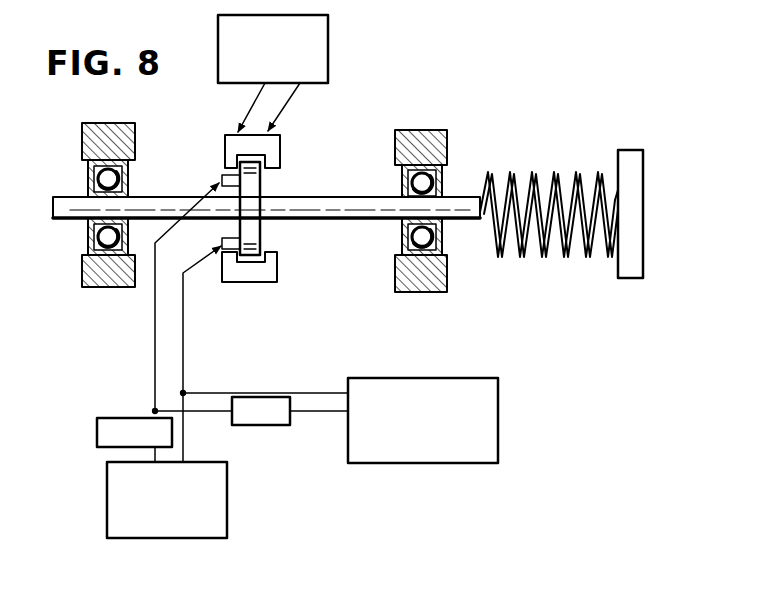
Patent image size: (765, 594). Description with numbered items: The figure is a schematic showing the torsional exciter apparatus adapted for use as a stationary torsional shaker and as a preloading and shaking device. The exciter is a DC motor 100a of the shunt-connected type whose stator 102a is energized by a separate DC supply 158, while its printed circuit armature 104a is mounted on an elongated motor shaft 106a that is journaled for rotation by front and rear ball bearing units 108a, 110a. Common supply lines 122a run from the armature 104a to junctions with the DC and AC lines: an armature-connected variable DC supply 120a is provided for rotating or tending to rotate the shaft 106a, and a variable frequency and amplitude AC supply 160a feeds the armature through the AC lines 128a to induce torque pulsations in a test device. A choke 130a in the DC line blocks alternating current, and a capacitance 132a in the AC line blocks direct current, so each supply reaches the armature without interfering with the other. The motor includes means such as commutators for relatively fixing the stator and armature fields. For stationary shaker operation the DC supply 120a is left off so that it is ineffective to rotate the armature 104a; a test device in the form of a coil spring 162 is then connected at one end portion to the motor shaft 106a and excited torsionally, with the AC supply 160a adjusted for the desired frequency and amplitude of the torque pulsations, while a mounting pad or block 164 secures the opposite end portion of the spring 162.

The DC motor 100a is at (292, 182).
The stator 102a is at (288, 125).
The armature 104a is at (262, 192).
The motor shaft 106a is at (331, 221).
The front bearing unit 108a is at (447, 170).
The rear bearing unit 110a is at (137, 163).
The variable DC supply 120a is at (152, 540).
The common supply lines 122a is at (155, 317).
The AC lines 128a is at (316, 412).
The choke 130a is at (120, 418).
The capacitance 132a is at (272, 425).
The DC supply 158 is at (328, 15).
The variable frequency and amplitude AC supply 160a is at (460, 463).
The coil spring 162 is at (527, 258).
The mounting pad or block 164 is at (652, 133).